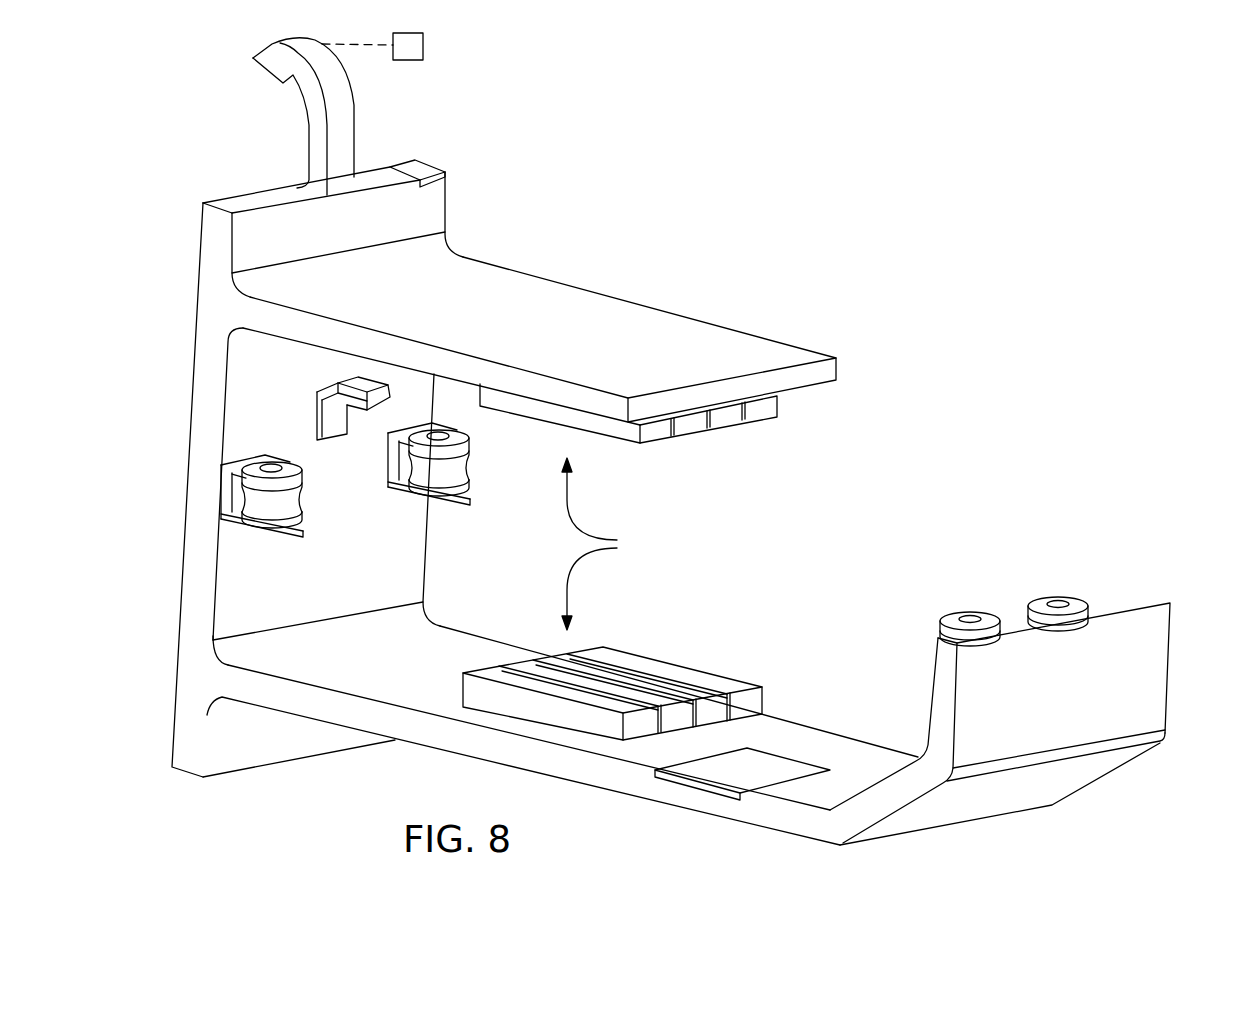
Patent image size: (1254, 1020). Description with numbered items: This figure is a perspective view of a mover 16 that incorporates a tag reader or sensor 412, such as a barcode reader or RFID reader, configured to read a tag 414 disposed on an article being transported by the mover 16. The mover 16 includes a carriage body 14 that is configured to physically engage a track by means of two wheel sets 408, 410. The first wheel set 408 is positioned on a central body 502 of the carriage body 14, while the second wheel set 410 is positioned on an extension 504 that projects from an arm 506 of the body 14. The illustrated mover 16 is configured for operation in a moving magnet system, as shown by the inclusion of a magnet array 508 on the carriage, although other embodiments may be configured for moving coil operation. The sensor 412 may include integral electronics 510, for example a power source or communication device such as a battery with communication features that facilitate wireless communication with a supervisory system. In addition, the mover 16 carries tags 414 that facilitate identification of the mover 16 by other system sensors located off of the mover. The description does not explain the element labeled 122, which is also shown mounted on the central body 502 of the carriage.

The carriage body 14 is at (440, 765).
The mover 16 is at (716, 283).
The clip 122 is at (330, 368).
The wheel set 408 is at (403, 493).
The wheel set 410 is at (1047, 602).
The sensor 412 is at (356, 112).
The tag 414 is at (430, 165).
The central body 502 is at (202, 518).
The extension 504 is at (1147, 673).
The arm 506 is at (760, 830).
The magnet array 508 is at (610, 544).
The integral electronics 510 is at (423, 47).